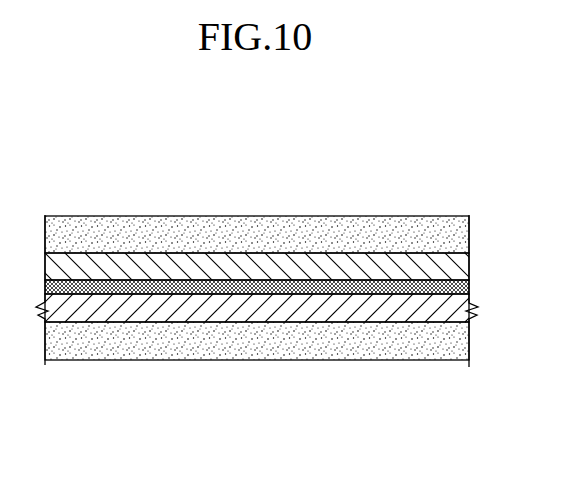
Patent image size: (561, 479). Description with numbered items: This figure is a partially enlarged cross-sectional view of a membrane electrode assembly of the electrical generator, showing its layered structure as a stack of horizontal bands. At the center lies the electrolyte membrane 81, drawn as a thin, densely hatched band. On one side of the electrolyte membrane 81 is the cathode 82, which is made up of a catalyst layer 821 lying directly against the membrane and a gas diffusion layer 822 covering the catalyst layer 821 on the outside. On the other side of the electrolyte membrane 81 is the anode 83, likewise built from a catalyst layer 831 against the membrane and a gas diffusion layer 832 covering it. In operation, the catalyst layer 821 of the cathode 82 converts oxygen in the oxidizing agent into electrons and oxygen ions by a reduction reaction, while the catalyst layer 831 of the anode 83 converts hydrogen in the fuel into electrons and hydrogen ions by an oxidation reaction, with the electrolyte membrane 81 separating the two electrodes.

The electrolyte membrane 81 is at (422, 288).
The cathode 82 is at (260, 203).
The catalyst layer 821 is at (292, 150).
The gas diffusion layer 822 is at (271, 235).
The anode 83 is at (260, 374).
The catalyst layer 831 is at (203, 310).
The gas diffusion layer 832 is at (183, 418).